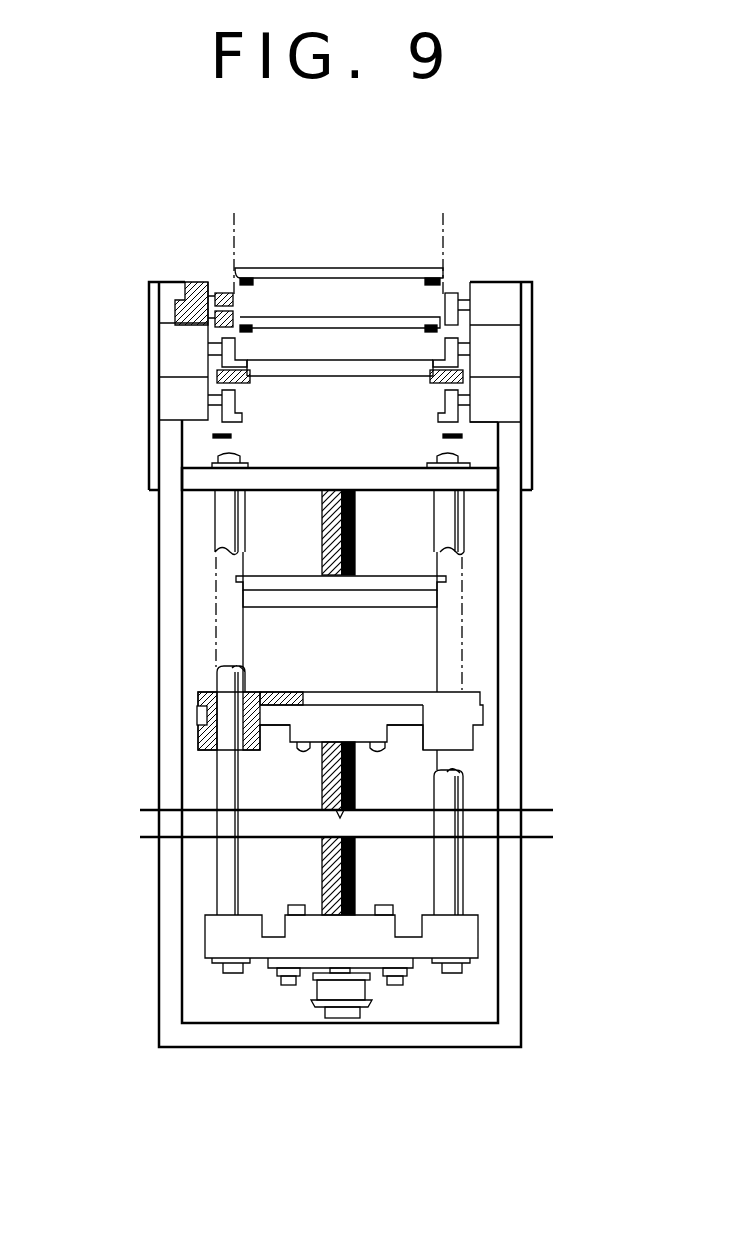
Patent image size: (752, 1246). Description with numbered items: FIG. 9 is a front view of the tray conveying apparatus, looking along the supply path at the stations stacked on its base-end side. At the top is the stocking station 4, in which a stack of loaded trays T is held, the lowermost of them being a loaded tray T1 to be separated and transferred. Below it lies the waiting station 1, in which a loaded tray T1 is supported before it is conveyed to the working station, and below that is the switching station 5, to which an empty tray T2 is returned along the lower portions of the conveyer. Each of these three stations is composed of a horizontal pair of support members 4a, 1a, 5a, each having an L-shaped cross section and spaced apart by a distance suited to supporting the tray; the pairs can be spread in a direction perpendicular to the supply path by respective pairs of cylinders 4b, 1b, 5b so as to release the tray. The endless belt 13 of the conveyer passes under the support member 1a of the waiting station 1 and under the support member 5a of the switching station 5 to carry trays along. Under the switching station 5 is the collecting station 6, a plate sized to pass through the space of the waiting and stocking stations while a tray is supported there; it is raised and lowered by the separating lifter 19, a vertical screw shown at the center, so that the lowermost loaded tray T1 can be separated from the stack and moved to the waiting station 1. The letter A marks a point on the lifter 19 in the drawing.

The stack of loaded trays T is at (235, 232).
The loaded tray T1 is at (285, 367).
The empty tray T2 is at (275, 580).
The waiting station 1 is at (470, 353).
The support member 1a is at (212, 376).
The cylinder 1b is at (505, 360).
The stocking station 4 is at (455, 292).
The support member 4a is at (186, 317).
The cylinder 4b is at (498, 288).
The switching station 5 is at (465, 398).
The support member 5a is at (225, 418).
The cylinder 5b is at (508, 416).
The collecting station 6 is at (432, 598).
The endless belt 13 is at (218, 442).
The separating lifter 19 is at (360, 776).
The section indicator A is at (340, 813).